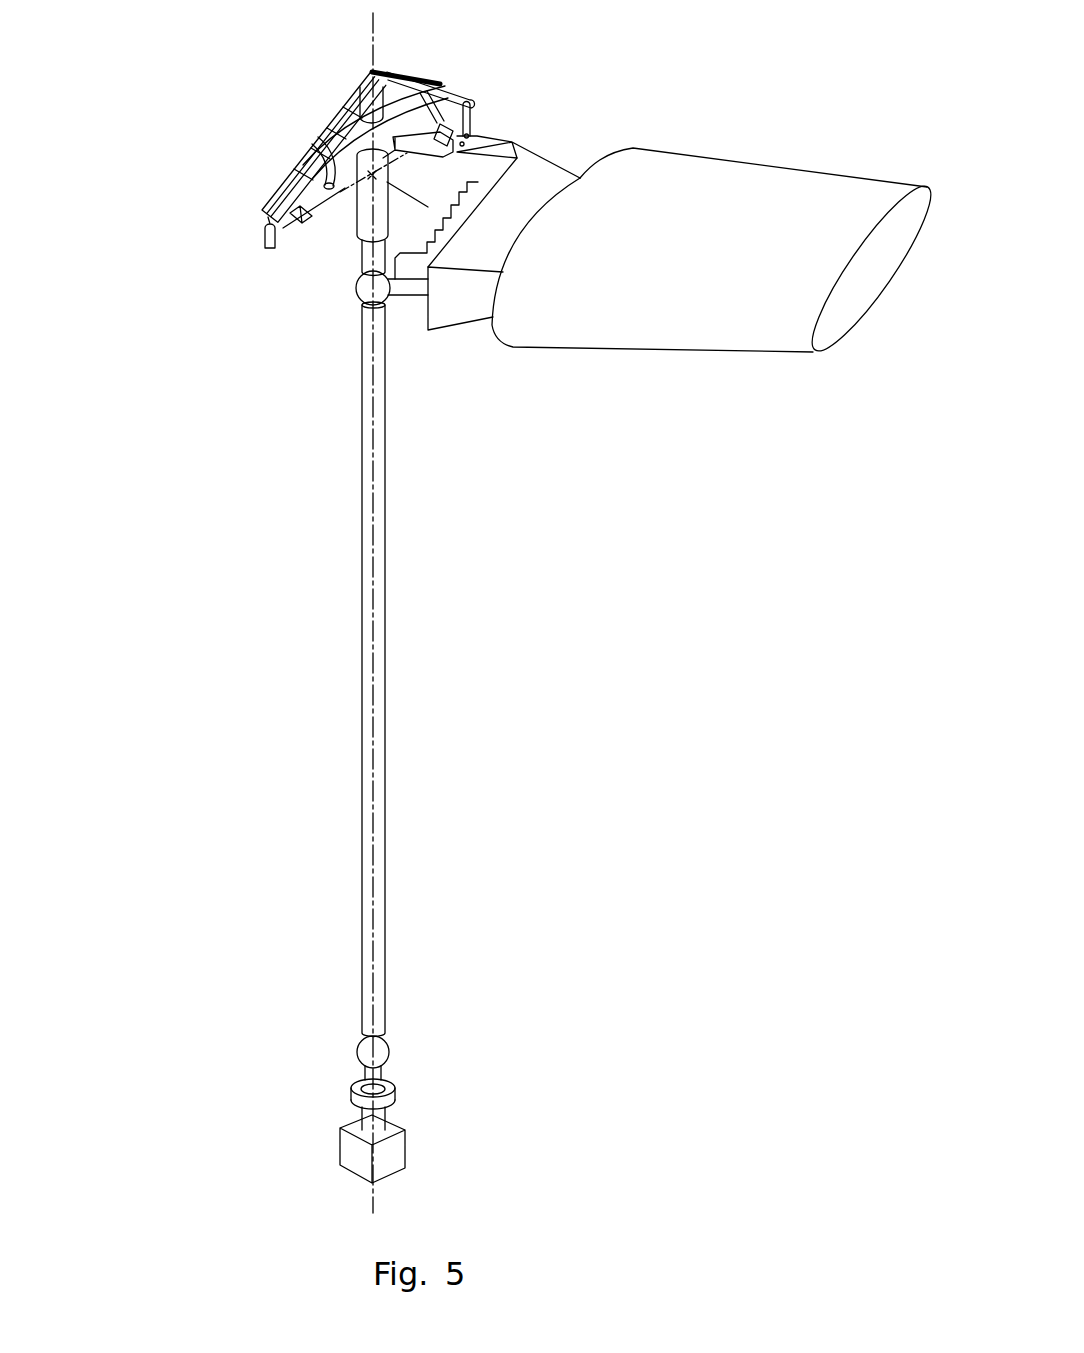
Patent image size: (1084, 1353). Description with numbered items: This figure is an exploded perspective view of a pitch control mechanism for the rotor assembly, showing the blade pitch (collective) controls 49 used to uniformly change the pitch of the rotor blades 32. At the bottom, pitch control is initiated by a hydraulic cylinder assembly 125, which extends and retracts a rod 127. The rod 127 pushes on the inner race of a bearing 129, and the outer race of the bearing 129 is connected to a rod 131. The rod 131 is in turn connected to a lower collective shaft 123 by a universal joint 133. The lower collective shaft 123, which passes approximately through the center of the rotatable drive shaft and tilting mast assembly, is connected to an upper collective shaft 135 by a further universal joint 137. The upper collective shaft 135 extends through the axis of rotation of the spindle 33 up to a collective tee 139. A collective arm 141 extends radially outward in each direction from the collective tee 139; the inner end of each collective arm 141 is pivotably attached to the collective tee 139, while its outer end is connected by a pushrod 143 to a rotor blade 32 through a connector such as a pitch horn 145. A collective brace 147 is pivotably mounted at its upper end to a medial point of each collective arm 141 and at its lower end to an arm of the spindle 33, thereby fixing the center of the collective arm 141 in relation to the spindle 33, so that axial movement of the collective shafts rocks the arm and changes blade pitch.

The rotor blade 32 is at (780, 166).
The spindle 33 is at (396, 136).
The blade pitch (collective) controls 49 is at (545, 692).
The lower collective shaft 123 is at (384, 677).
The hydraulic cylinder assembly 125 is at (408, 1156).
The rod 127 is at (357, 1113).
The bearing 129 is at (356, 1088).
The rod 131 is at (390, 1064).
The universal joint 133 is at (388, 1048).
The upper collective shaft 135 is at (356, 252).
The universal joint 137 is at (357, 297).
The collective tee 139 is at (373, 72).
The collective arm 141 is at (332, 100).
The pushrod 143 is at (474, 104).
The pitch horn 145 is at (482, 139).
The collective brace 147 is at (308, 170).